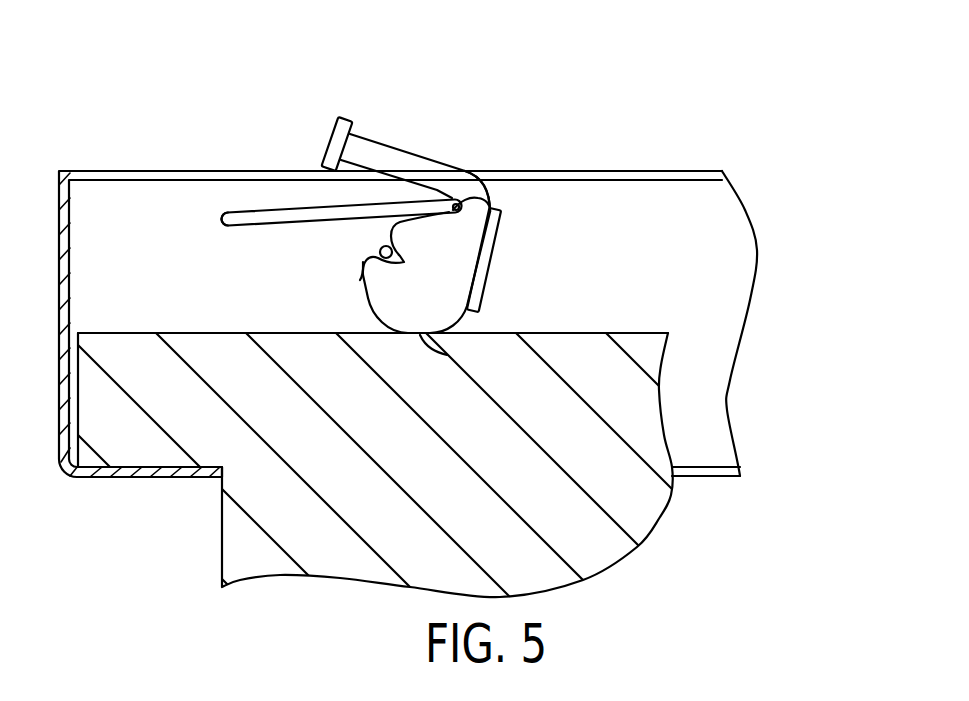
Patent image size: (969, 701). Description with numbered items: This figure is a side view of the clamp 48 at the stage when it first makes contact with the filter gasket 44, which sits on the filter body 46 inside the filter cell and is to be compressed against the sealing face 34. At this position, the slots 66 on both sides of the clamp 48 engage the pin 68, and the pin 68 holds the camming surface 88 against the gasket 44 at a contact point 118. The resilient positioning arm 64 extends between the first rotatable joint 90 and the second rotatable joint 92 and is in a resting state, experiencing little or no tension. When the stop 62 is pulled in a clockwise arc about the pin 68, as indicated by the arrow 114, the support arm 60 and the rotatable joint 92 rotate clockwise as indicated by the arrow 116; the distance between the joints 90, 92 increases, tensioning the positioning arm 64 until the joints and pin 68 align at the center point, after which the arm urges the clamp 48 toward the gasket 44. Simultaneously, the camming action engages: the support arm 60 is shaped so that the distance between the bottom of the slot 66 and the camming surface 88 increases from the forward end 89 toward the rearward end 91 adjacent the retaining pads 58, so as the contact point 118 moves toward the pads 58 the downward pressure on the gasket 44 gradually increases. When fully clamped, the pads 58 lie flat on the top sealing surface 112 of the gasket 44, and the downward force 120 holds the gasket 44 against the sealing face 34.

The sealing face 34 is at (152, 465).
The sealing gasket 44 is at (348, 394).
The filter body 46 is at (425, 566).
The clamp 48 is at (227, 57).
The retaining pads 58 is at (496, 254).
The support arm 60 is at (430, 137).
The stop 62 is at (334, 142).
The positioning arm 64 is at (268, 210).
The slots 66 is at (370, 238).
The pin 68 is at (380, 252).
The camming surface 88 is at (370, 311).
The forward end 89 is at (360, 280).
The first rotatable joint 90 is at (225, 222).
The rearward end 91 is at (472, 313).
The second rotatable joint 92 is at (486, 196).
The top sealing surface 112 is at (629, 333).
The arrow 114 is at (403, 85).
The arrow 116 is at (580, 147).
The contact point 118 is at (447, 355).
The force direction 120 is at (420, 348).